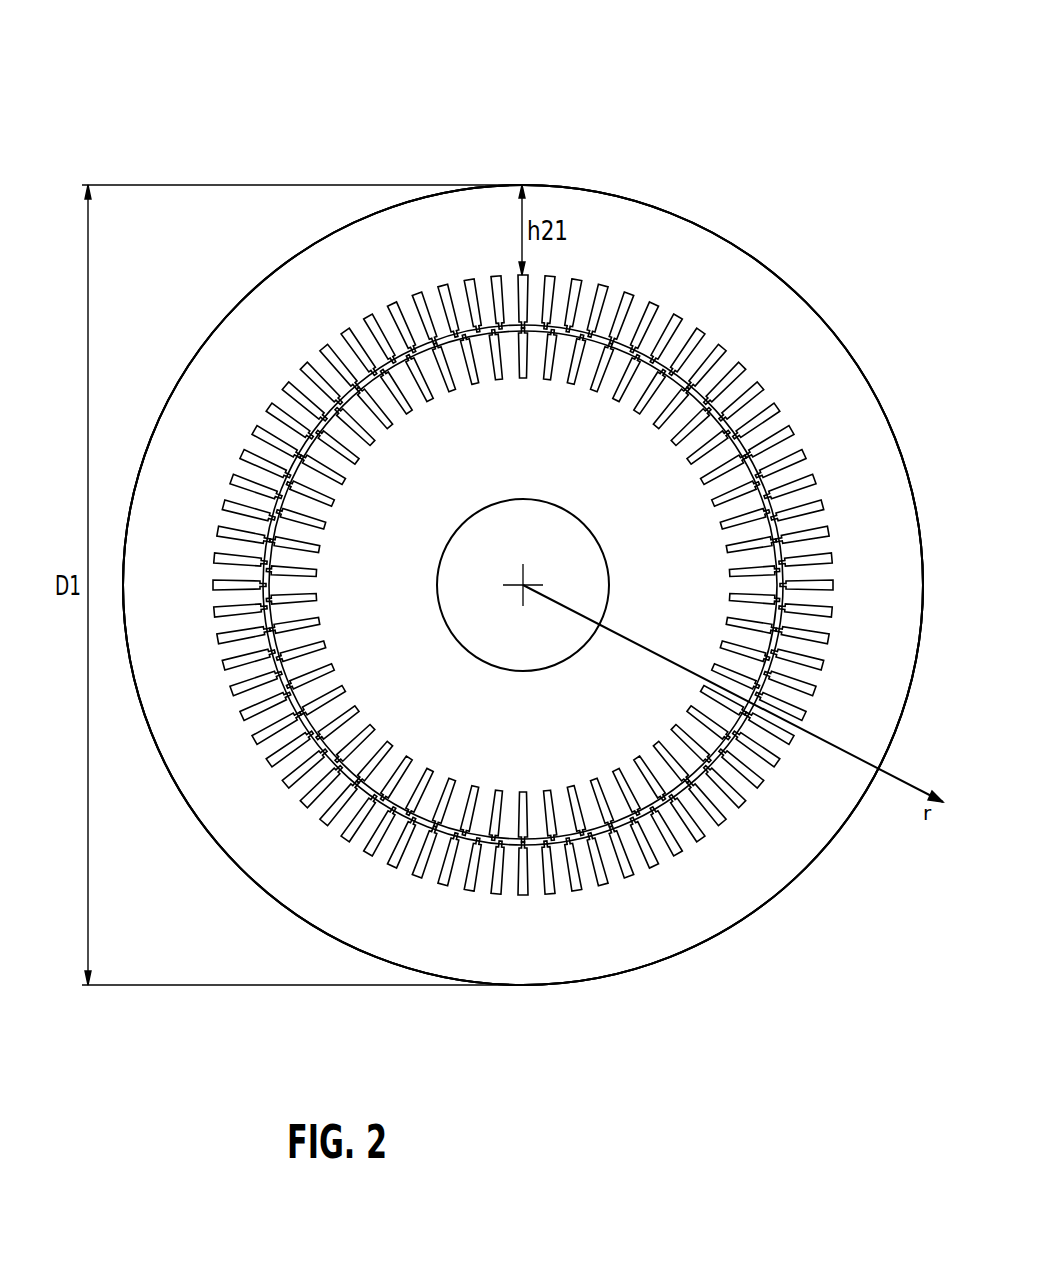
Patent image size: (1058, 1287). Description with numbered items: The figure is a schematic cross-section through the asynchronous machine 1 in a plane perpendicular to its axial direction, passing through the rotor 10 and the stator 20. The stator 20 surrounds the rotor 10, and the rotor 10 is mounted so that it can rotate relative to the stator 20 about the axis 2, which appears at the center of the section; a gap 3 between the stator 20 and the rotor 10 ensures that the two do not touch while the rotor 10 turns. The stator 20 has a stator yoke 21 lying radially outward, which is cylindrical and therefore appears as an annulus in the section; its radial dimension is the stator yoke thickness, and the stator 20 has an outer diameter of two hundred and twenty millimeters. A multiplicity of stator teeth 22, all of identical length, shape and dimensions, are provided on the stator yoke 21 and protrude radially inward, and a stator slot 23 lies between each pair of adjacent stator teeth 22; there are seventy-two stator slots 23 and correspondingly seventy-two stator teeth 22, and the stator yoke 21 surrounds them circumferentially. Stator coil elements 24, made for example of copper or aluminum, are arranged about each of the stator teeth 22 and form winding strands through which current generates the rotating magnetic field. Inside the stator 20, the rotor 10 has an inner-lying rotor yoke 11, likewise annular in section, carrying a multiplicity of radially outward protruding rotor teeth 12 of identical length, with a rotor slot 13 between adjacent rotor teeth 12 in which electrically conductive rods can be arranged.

The asynchronous machine 1 is at (401, 126).
The axis 2 is at (523, 587).
The gap 3 is at (318, 378).
The rotor 10 is at (539, 453).
The rotor yoke 11 is at (722, 345).
The rotor teeth 12 is at (693, 443).
The rotor slot 13 is at (703, 462).
The stator 20 is at (550, 962).
The stator yoke 21 is at (595, 930).
The stator teeth 22 is at (633, 855).
The stator slot 23 is at (655, 857).
The stator coil elements 24 is at (680, 317).